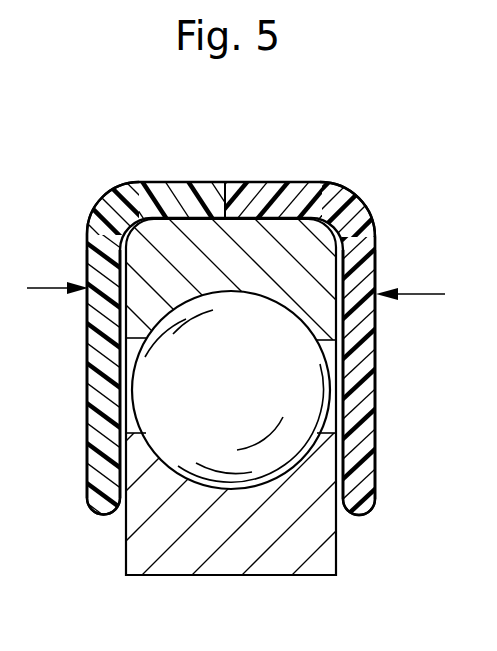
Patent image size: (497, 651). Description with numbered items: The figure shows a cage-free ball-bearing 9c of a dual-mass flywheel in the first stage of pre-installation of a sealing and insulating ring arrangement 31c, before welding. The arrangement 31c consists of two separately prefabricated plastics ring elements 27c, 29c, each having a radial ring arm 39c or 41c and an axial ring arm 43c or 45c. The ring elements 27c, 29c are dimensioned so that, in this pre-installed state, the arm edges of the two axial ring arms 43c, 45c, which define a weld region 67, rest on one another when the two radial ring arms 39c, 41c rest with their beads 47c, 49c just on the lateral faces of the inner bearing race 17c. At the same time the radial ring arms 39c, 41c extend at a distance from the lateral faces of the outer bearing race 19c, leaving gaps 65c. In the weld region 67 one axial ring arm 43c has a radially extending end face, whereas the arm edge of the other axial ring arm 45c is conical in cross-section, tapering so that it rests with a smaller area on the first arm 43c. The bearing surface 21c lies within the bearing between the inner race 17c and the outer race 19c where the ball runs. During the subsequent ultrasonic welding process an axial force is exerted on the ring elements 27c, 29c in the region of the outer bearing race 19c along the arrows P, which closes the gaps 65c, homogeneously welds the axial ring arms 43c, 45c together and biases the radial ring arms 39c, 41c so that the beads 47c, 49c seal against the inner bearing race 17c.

The ball-bearing 9c is at (310, 361).
The inner bearing race 17c is at (315, 567).
The outer bearing race 19c is at (290, 278).
The socket bearing surface 21c is at (297, 408).
The ring element 27c is at (87, 232).
The ring element 29c is at (368, 226).
The sealing and insulating ring arrangement 31c is at (216, 302).
The radial ring arm 39c is at (100, 389).
The radial ring arm 41c is at (367, 452).
The axial ring arm 43c is at (181, 212).
The axial ring arm 45c is at (284, 198).
The bead 47c is at (105, 507).
The bead 49c is at (350, 512).
The gap 65c is at (110, 305).
The weld region 67 is at (230, 183).
The arrows P is at (236, 281).